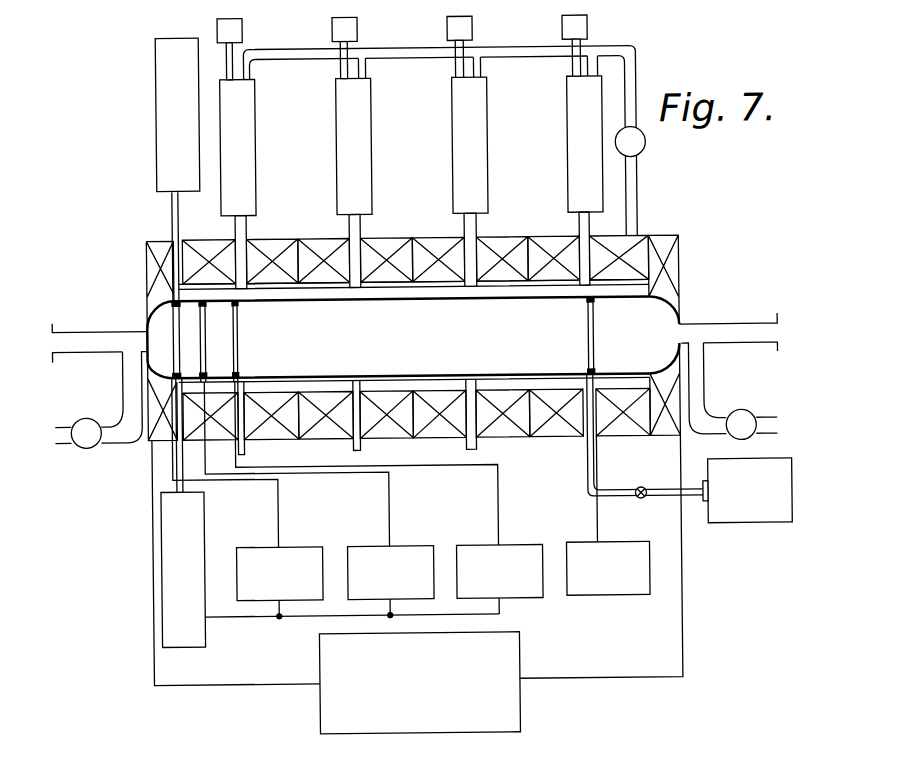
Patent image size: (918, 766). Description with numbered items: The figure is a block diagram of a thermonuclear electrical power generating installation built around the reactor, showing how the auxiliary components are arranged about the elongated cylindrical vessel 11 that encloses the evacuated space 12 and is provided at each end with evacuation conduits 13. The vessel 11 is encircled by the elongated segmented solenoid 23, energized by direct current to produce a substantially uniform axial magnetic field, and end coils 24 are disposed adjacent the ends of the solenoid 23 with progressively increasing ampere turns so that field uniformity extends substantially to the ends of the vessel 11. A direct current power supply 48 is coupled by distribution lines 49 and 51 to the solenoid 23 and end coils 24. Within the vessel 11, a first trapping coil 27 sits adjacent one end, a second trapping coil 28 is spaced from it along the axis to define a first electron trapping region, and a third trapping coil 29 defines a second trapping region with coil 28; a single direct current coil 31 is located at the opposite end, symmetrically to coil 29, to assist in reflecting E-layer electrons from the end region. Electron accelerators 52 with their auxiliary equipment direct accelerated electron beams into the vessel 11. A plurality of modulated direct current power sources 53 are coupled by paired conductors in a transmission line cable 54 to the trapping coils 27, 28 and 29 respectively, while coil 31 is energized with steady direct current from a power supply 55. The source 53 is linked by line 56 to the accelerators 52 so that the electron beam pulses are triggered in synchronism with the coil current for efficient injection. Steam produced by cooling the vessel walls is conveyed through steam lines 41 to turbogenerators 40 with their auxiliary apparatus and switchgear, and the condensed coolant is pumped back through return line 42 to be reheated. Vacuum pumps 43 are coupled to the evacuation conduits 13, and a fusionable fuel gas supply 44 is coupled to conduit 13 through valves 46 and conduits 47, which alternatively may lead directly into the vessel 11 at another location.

The elongated cylindrical vessel 11 is at (679, 305).
The space 12 is at (418, 343).
The evacuation conduits 13 is at (106, 329).
The elongated segmented solenoid 23 is at (400, 240).
The end coils 24 is at (147, 243).
The first trapping coil 27 is at (173, 333).
The second trapping coil 28 is at (200, 340).
The third trapping coil 29 is at (233, 340).
The direct current coil 31 is at (588, 329).
The turbogenerators 40 is at (258, 142).
The steam lines 41 is at (351, 227).
The return line 42 is at (639, 202).
The vacuum pumps 43 is at (90, 412).
The fusionable fuel gas supply 44 is at (749, 527).
The valves 46 is at (642, 490).
The conduits 47 is at (470, 449).
The direct current power supply 48 is at (517, 660).
The distribution line 49 is at (619, 679).
The distribution line 51 is at (285, 682).
The electron accelerators 52 is at (159, 115).
The modulated direct current power sources 53 is at (299, 545).
The transmission line cable 54 is at (246, 479).
The power supply 55 is at (608, 599).
The line 56 is at (258, 616).